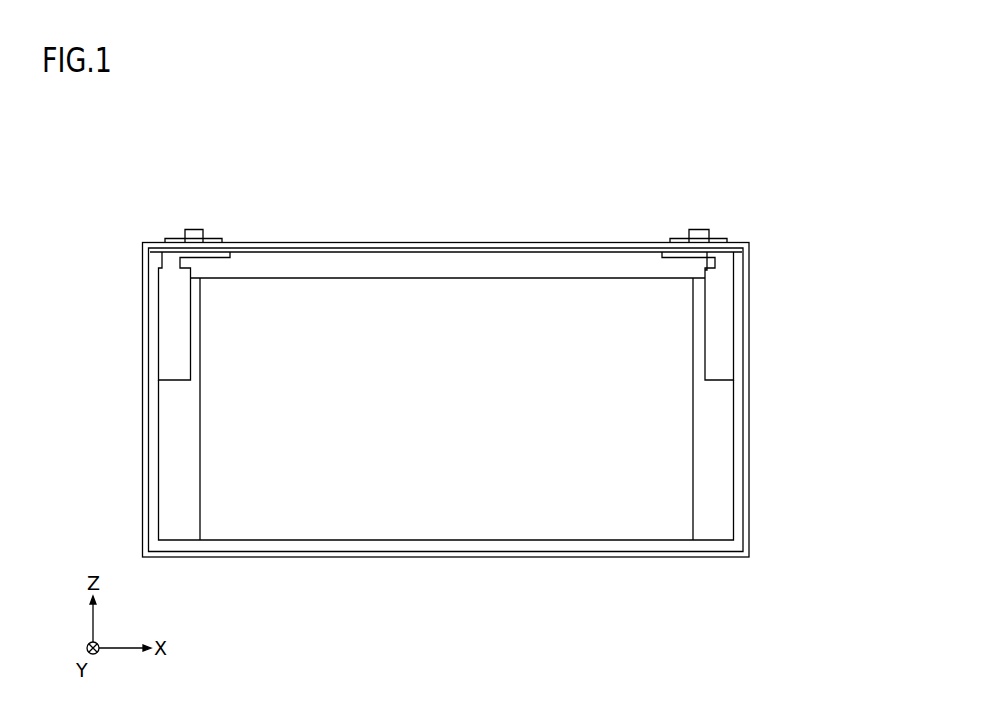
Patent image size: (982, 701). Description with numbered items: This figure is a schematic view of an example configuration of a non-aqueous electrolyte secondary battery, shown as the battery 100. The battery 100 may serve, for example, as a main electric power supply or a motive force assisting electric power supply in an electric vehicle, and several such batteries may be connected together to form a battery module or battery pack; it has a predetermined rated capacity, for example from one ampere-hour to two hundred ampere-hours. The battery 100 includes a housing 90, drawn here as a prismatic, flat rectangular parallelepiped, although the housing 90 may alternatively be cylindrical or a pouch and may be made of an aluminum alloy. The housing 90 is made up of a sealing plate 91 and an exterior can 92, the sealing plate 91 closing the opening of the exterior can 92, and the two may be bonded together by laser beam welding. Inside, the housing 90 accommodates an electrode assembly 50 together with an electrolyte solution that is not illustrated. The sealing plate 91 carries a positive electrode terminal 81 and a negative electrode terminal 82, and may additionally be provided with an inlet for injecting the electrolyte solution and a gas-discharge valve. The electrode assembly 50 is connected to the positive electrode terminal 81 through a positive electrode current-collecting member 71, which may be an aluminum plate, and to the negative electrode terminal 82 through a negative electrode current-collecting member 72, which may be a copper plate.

The battery 100 is at (148, 151).
The housing 90 is at (830, 163).
The sealing plate 91 is at (575, 245).
The exterior can 92 is at (751, 265).
The positive electrode terminal 81 is at (698, 229).
The negative electrode terminal 82 is at (192, 229).
The positive electrode current-collecting member 71 is at (718, 332).
The negative electrode current-collecting member 72 is at (170, 327).
The electrode assembly 50 is at (447, 498).